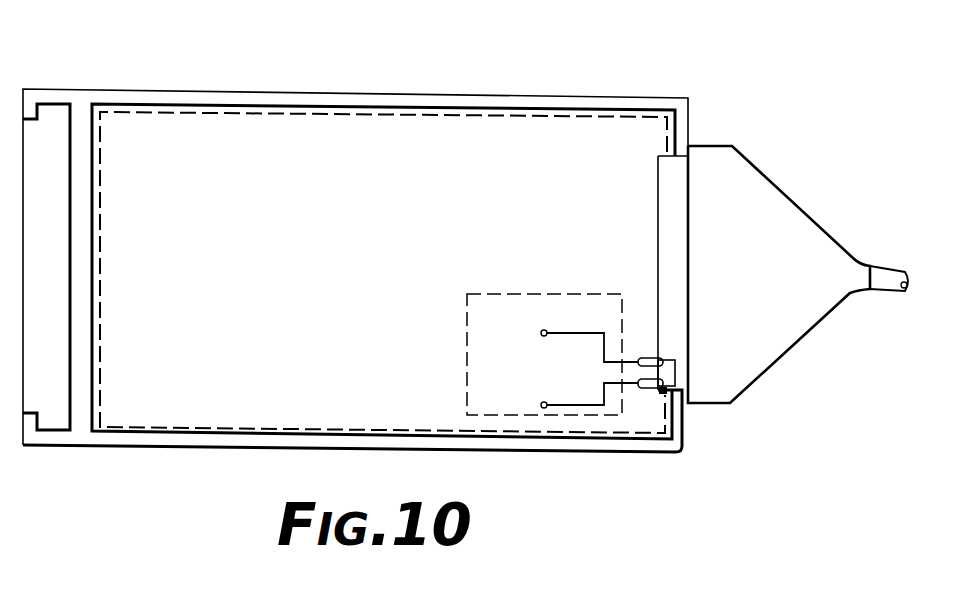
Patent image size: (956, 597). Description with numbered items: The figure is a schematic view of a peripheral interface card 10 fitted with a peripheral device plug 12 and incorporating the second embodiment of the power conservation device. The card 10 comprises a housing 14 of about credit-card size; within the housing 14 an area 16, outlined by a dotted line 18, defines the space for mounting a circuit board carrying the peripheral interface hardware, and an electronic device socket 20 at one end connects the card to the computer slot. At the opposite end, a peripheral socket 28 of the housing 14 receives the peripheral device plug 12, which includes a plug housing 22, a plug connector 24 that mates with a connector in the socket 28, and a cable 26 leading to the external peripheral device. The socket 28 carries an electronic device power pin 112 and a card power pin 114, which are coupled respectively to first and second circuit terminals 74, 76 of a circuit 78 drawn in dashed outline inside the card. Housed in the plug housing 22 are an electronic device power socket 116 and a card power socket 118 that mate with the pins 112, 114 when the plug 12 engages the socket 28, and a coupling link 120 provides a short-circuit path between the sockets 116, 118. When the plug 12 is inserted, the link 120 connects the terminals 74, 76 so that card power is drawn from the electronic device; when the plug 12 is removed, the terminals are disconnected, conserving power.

The peripheral interface card 10 is at (579, 88).
The peripheral device plug 12 is at (798, 271).
The housing 14 is at (368, 95).
The area 16 is at (214, 136).
The dotted line 18 is at (148, 112).
The electronic device socket 20 is at (33, 131).
The plug housing 22 is at (770, 220).
The plug connector 24 is at (660, 181).
The cable 26 is at (889, 292).
The peripheral socket 28 is at (631, 229).
The first circuit terminal 74 is at (585, 332).
The second circuit terminal 76 is at (562, 402).
The circuit 78 is at (466, 362).
The electronic device power pin 112 is at (650, 355).
The card power pin 114 is at (647, 388).
The electronic device power socket 116 is at (664, 357).
The card power socket 118 is at (667, 396).
The coupling link 120 is at (676, 368).